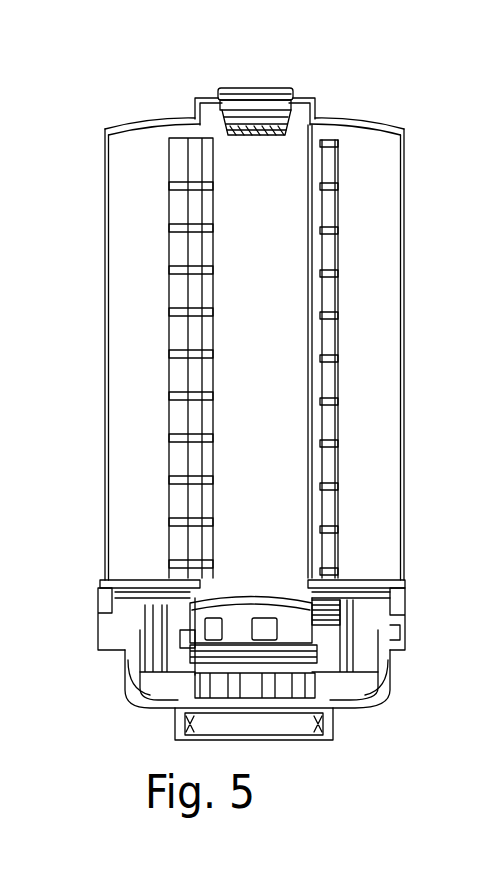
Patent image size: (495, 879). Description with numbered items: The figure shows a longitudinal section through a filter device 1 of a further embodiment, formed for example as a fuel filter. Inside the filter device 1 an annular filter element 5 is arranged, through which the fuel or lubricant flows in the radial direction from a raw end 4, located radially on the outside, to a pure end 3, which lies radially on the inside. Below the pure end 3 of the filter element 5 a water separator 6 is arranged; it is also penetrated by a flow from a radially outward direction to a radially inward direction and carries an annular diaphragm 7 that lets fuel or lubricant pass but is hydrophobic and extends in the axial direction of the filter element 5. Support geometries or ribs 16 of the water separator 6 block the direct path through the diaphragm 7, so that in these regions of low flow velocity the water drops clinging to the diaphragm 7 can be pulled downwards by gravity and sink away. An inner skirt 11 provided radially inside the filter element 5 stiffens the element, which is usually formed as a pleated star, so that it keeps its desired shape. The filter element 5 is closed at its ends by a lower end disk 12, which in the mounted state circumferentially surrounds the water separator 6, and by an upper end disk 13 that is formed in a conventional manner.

The filter device 1 is at (357, 90).
The pure end 3 is at (168, 243).
The raw end 4 is at (104, 316).
The filter element 5 is at (368, 381).
The water separator 6 is at (88, 690).
The diaphragm 7 is at (400, 625).
The inner skirt 11 is at (335, 305).
The lower end disk 12 is at (373, 583).
The upper end disk 13 is at (363, 121).
The support geometries/ribs 16 is at (383, 662).